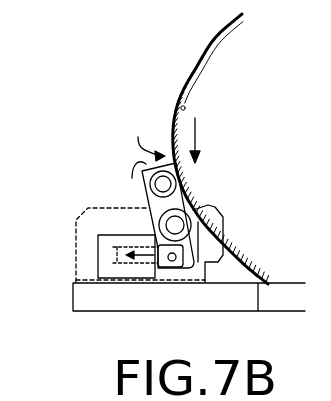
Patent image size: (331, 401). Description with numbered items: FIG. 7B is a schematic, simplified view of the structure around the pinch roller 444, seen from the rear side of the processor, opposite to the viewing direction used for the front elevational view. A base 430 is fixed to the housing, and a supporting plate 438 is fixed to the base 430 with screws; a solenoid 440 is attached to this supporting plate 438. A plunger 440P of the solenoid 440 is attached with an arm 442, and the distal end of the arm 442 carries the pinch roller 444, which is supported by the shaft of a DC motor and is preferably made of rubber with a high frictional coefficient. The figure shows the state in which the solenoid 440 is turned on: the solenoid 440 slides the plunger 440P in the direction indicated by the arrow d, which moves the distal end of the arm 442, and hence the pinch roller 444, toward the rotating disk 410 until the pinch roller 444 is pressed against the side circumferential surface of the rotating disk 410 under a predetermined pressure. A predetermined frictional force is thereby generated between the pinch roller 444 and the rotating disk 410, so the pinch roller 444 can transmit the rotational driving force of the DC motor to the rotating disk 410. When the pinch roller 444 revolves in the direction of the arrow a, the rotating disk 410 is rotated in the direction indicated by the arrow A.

The rotating disk 410 is at (222, 62).
The base 430 is at (103, 300).
The supporting plate 438 is at (77, 252).
The solenoid 440 is at (102, 230).
The plunger 440P is at (160, 266).
The arm 442 is at (230, 201).
The pinch roller 444 is at (143, 182).
The arrow a is at (148, 145).
The arrow A is at (197, 133).
The arrow d is at (158, 256).